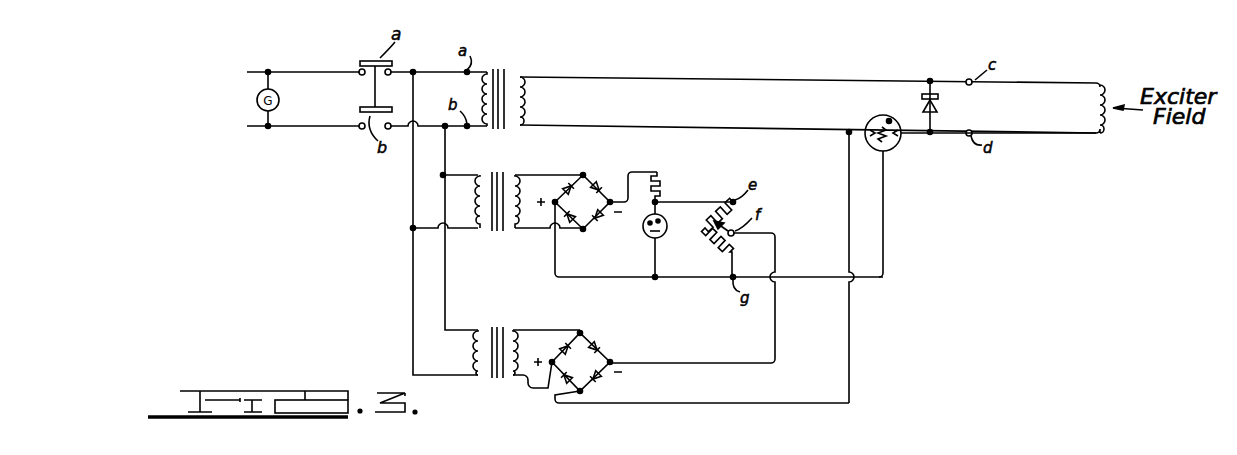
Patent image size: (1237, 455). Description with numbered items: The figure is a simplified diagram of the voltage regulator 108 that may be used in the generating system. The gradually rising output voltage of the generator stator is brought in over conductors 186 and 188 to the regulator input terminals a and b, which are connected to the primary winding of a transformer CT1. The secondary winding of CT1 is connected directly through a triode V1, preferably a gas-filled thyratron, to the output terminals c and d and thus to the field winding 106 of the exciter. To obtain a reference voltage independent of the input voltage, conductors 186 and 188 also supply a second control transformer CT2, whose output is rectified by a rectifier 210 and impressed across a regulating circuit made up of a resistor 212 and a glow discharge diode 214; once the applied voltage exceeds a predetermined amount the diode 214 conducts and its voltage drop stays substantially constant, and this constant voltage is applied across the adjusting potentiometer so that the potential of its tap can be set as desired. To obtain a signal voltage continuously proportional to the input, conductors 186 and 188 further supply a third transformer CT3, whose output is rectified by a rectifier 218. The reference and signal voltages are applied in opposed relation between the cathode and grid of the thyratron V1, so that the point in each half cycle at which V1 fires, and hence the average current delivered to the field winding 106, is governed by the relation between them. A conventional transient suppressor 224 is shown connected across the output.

The conductor 186 is at (298, 68).
The conductor 188 is at (298, 122).
The transformer CT1 is at (499, 72).
The second control transformer CT2 is at (510, 160).
The third transformer CT3 is at (510, 320).
The rectifier 210 is at (598, 175).
The resistor 212 is at (662, 180).
The diode 214 is at (650, 235).
The rectifier 218 is at (607, 356).
The transient suppressor 224 is at (940, 103).
The triode V1 is at (885, 103).
The field winding 106 is at (1108, 128).
The voltage regulator 108 is at (957, 269).